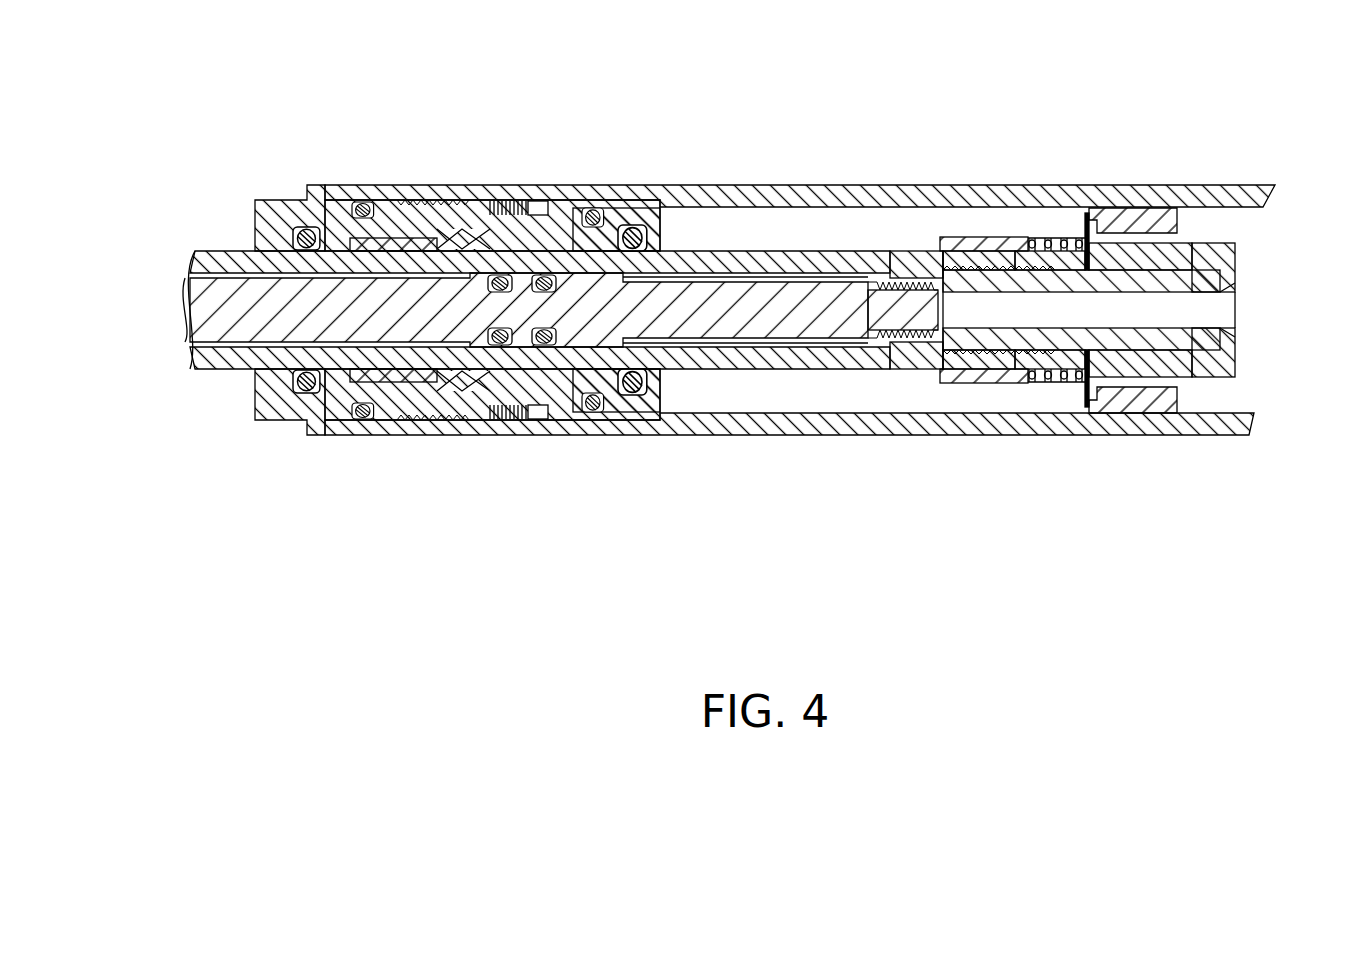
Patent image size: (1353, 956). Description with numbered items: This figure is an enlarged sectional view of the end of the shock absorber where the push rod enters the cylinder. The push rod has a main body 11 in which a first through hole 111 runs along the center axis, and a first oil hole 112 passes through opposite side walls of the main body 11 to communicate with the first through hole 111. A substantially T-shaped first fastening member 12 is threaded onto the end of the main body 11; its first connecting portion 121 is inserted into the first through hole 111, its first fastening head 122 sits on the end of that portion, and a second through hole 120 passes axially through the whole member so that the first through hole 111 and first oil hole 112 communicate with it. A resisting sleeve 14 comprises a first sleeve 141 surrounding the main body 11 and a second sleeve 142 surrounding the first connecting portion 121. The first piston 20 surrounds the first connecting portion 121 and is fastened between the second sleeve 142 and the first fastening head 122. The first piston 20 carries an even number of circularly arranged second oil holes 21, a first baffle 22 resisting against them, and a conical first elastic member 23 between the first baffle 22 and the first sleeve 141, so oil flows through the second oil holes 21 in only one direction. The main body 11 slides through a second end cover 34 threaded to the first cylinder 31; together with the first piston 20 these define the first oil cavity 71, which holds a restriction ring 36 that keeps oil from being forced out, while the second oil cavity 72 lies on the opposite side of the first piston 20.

The main body 11 is at (715, 358).
The first through hole 111 is at (787, 278).
The first oil hole 112 is at (906, 258).
The first fastening member 12 is at (1127, 262).
The second through hole 120 is at (1183, 313).
The first connecting portion 121 is at (1152, 280).
The first fastening head 122 is at (1222, 252).
The resisting sleeve 14 is at (1016, 216).
The first sleeve 141 is at (993, 240).
The second sleeve 142 is at (1052, 248).
The first piston 20 is at (1096, 308).
The second oil holes 21 is at (1132, 234).
The first baffle 22 is at (1081, 403).
The first elastic member 23 is at (1045, 380).
The first cylinder 31 is at (688, 198).
The second end cover 34 is at (340, 198).
The restriction ring 36 is at (572, 198).
The first oil cavity 71 is at (870, 395).
The second oil cavity 72 is at (1247, 220).